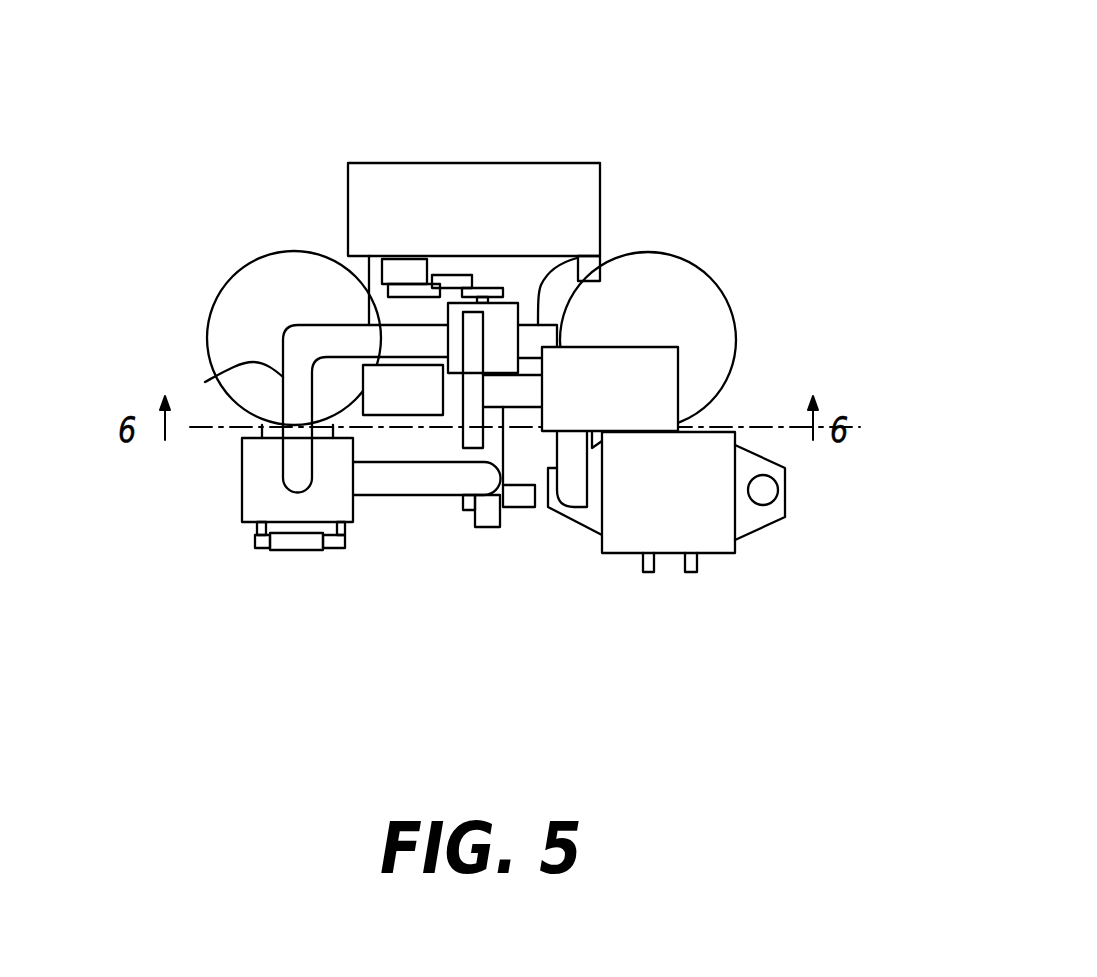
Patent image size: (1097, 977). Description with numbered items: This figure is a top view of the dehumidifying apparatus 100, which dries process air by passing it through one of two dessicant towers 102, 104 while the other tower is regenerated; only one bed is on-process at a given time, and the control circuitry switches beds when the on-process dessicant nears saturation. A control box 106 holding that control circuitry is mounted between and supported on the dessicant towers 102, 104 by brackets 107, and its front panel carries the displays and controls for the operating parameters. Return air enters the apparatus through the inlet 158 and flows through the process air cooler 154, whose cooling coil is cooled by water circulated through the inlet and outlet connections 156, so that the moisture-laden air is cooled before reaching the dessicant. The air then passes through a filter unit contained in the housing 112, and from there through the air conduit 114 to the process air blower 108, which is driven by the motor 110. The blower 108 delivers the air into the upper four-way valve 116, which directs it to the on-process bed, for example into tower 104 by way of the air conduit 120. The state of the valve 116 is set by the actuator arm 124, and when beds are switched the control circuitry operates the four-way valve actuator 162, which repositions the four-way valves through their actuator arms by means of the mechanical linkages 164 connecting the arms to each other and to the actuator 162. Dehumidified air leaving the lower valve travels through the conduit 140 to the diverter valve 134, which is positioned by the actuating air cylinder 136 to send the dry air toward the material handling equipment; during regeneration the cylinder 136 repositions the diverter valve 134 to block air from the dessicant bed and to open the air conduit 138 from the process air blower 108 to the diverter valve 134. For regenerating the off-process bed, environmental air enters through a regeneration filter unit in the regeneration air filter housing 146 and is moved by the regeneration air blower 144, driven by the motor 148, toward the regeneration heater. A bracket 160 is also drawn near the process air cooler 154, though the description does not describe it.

The dehumidifying apparatus 100 is at (650, 118).
The dessicant tower 102 is at (711, 278).
The dessicant tower 104 is at (221, 296).
The control box 106 is at (347, 172).
The brackets 107 is at (372, 270).
The process air blower 108 is at (390, 320).
The motor 110 is at (366, 367).
The housing 112 is at (680, 350).
The air conduit 114 is at (530, 393).
The upper 4-way valve 116 is at (473, 338).
The air conduit 120 is at (603, 257).
The actuator arm 124 is at (473, 288).
The diverter valve 134 is at (242, 484).
The actuating air cylinder 136 is at (278, 556).
The air conduit 138 is at (205, 382).
The conduit 140 is at (365, 497).
The regeneration air blower 144 is at (483, 528).
The regeneration air filter housing 146 is at (465, 508).
The motor 148 is at (530, 508).
The process air cooler 154 is at (722, 545).
The inlet and outlet connections 156 is at (653, 573).
The inlet 158 is at (780, 500).
The bracket 160 is at (593, 522).
The 4-way valve actuator 162 is at (397, 259).
The mechanical linkages 164 is at (453, 278).